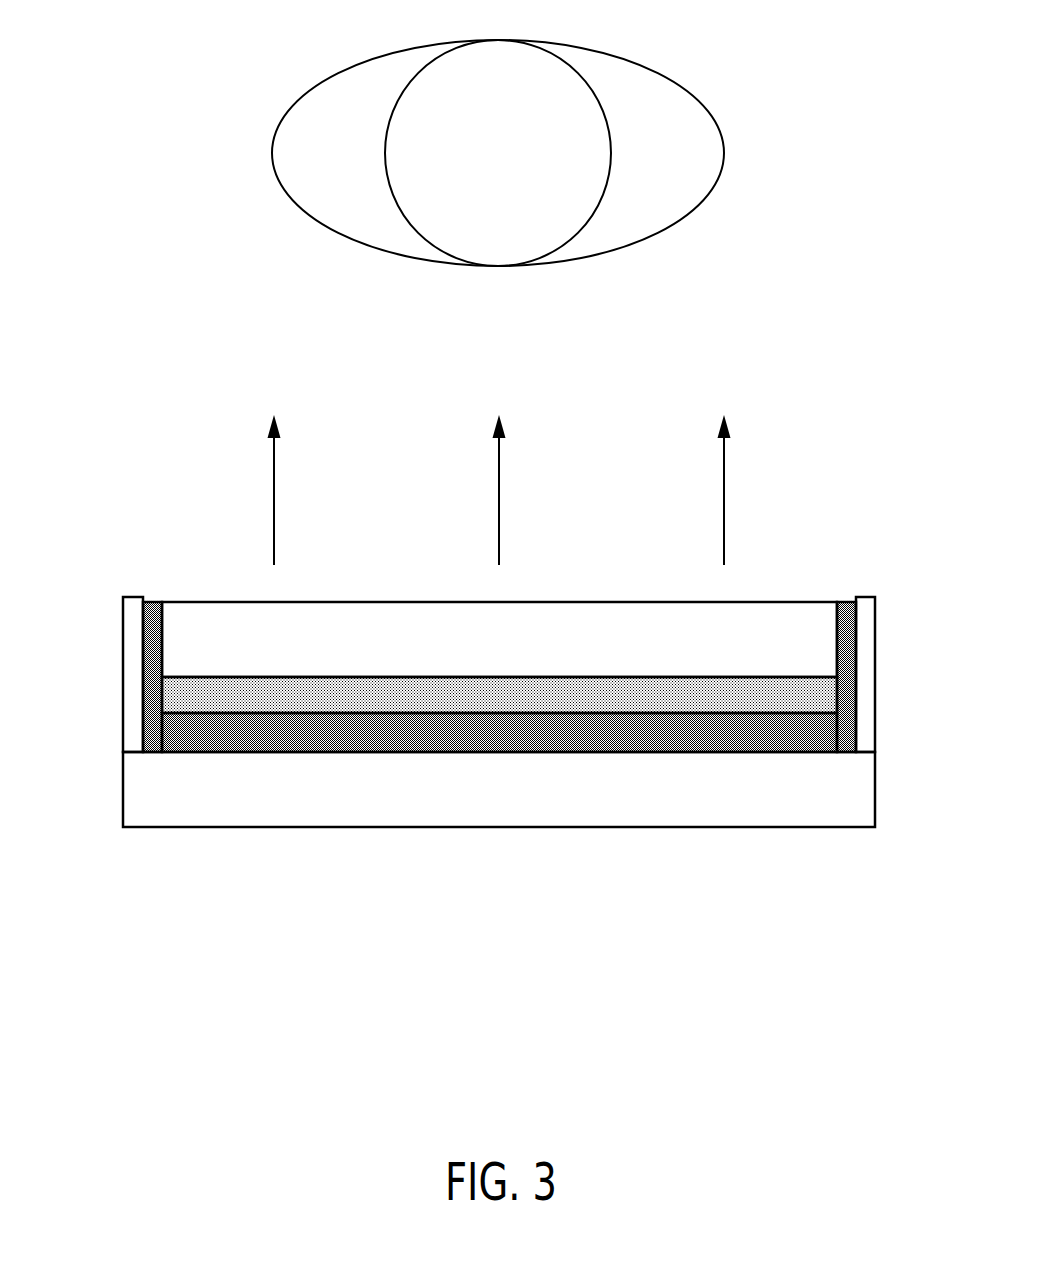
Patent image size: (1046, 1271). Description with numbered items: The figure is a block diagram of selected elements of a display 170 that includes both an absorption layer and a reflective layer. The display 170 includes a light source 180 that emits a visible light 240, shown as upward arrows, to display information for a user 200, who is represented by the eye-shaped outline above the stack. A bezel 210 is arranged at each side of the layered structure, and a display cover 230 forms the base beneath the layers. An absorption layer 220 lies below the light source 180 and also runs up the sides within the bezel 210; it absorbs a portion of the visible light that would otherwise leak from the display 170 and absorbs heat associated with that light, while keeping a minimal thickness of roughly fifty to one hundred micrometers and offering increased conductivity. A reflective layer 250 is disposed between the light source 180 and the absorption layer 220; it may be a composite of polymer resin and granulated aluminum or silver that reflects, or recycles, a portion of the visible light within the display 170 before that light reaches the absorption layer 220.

The display 170 is at (123, 375).
The light source 180 is at (483, 653).
The user 200 is at (482, 166).
The bezel 210 is at (104, 618).
The absorption layer 220 is at (152, 583).
The display cover 230 is at (483, 803).
The visible light 240 is at (523, 490).
The reflective layer 250 is at (483, 708).